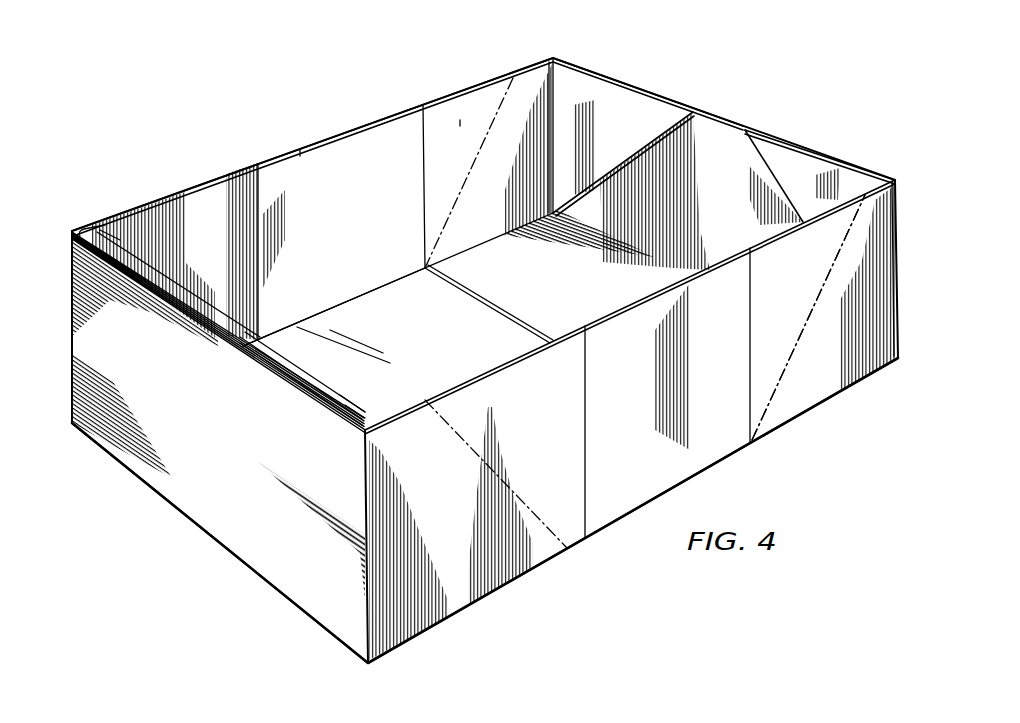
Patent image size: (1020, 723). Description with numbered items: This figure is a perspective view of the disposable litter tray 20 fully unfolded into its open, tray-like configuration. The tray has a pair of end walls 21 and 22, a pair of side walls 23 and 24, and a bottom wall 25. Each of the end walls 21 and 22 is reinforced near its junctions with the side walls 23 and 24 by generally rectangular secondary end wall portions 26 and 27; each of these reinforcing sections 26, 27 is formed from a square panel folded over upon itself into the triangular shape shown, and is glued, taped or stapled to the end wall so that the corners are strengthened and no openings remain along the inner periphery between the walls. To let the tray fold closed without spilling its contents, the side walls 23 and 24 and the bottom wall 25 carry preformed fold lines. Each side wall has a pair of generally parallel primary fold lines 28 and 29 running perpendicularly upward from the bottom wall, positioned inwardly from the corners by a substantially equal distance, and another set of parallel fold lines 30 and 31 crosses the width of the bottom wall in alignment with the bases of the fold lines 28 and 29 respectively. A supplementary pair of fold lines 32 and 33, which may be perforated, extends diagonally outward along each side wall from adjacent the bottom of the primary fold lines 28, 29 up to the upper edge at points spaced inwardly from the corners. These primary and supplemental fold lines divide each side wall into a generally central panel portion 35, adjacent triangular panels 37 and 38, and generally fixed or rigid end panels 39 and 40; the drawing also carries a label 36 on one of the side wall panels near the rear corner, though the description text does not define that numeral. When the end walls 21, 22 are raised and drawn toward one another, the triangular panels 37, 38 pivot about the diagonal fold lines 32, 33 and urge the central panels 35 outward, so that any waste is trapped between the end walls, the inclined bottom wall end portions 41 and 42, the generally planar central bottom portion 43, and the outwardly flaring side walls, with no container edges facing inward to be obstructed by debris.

The disposable litter tray 20 is at (234, 580).
The end wall 21 is at (178, 468).
The end wall 22 is at (715, 138).
The side wall 23 is at (297, 178).
The side wall 24 is at (716, 406).
The bottom wall 25 is at (368, 320).
The secondary end wall portion 26 is at (628, 110).
The secondary end wall portion 27 is at (808, 167).
The primary fold line 28 is at (257, 194).
The primary fold line 29 is at (421, 128).
The fold line 30 is at (363, 401).
The fold line 31 is at (463, 290).
The supplemental fold line 32 is at (145, 233).
The supplemental fold line 33 is at (490, 102).
The central panel portion 35 is at (345, 170).
The triangular panel 36 is at (453, 122).
The triangular panel 37 is at (193, 200).
The triangular panel 38 is at (823, 233).
The end panel 39 is at (115, 207).
The end panel 40 is at (535, 92).
The inclined bottom wall end portion 41 is at (273, 357).
The inclined bottom wall end portion 42 is at (575, 283).
The central bottom portion 43 is at (468, 352).